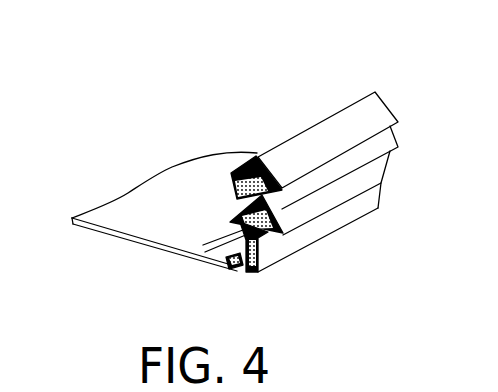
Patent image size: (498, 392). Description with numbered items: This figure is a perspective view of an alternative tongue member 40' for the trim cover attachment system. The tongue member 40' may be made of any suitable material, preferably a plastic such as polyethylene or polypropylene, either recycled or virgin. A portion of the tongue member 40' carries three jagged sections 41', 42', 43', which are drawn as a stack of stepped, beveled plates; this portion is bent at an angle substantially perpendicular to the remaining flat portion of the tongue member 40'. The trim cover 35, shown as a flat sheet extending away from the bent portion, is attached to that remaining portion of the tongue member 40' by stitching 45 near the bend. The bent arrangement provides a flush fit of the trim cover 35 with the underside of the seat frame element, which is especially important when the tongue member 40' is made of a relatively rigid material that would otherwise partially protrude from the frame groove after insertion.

The trim cover 35 is at (132, 222).
The tongue member 40' is at (314, 155).
The jagged section 41' is at (346, 164).
The jagged section 42' is at (324, 199).
The jagged section 43' is at (315, 221).
The stitching 45 is at (232, 268).